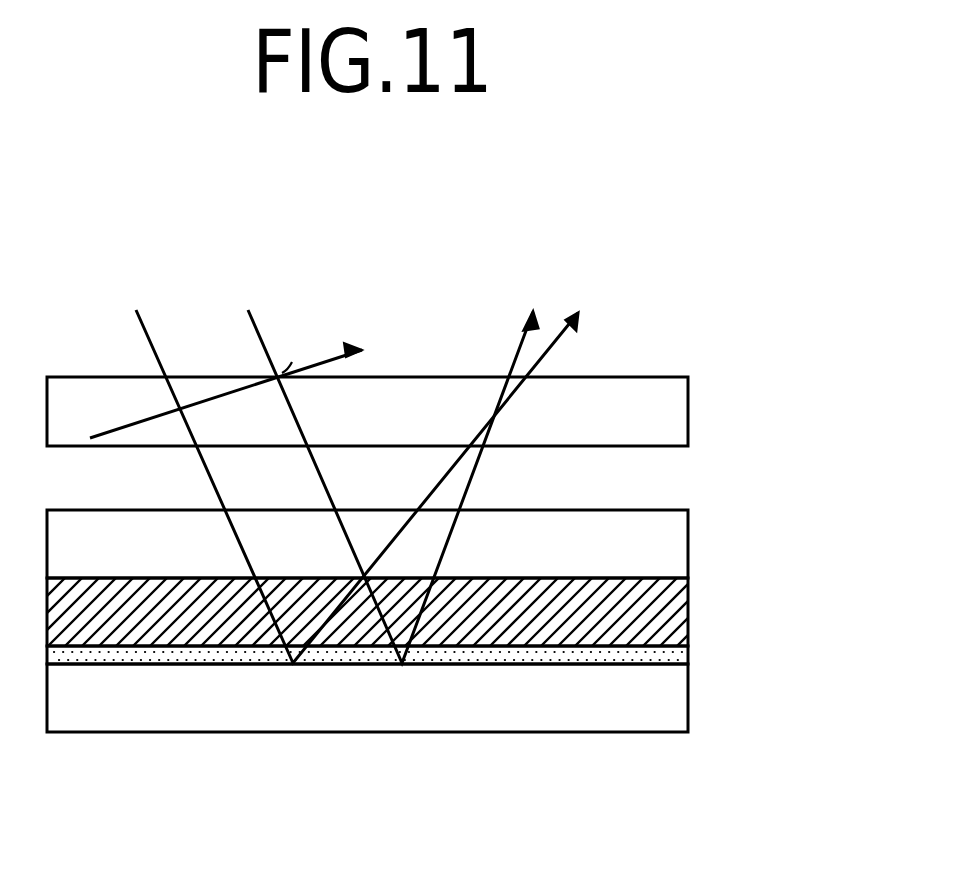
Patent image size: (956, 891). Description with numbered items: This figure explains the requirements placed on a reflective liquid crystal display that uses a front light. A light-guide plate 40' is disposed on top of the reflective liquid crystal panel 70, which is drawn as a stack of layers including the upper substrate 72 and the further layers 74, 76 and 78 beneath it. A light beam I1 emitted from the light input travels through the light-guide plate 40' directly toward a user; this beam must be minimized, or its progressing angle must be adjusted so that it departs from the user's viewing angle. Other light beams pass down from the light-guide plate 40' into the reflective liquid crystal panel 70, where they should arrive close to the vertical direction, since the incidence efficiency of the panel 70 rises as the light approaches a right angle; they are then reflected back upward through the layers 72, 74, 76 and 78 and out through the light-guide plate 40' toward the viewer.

The light-guide plate 40' is at (421, 410).
The reflective liquid crystal panel 70 is at (444, 623).
The upper substrate 72 is at (690, 545).
The recording layer 74 is at (690, 610).
The reflective layer 76 is at (690, 660).
The substrate 78 is at (414, 701).
The light beam I1 is at (244, 379).